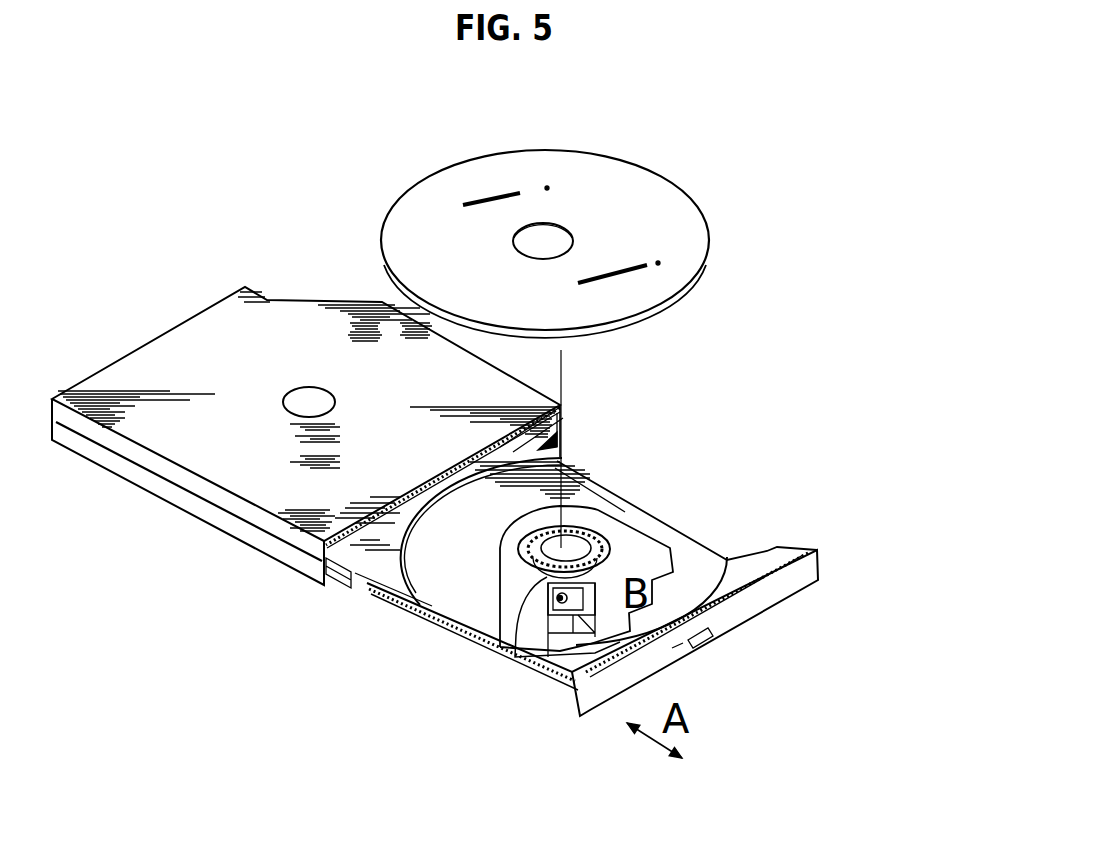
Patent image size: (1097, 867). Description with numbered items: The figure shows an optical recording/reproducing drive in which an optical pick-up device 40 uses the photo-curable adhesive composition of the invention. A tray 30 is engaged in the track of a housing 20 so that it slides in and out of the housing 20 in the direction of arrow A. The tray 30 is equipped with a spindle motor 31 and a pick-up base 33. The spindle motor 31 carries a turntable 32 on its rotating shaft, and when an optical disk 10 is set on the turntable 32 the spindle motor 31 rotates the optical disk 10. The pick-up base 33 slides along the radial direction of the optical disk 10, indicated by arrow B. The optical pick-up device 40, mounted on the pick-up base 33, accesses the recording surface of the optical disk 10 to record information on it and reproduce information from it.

The optical disk 10 is at (653, 178).
The housing 20 is at (168, 493).
The tray 30 is at (833, 560).
The spindle motor 31 is at (596, 550).
The turntable 32 is at (591, 540).
The pick-up base 33 is at (545, 650).
The optical pick-up device 40 is at (530, 625).